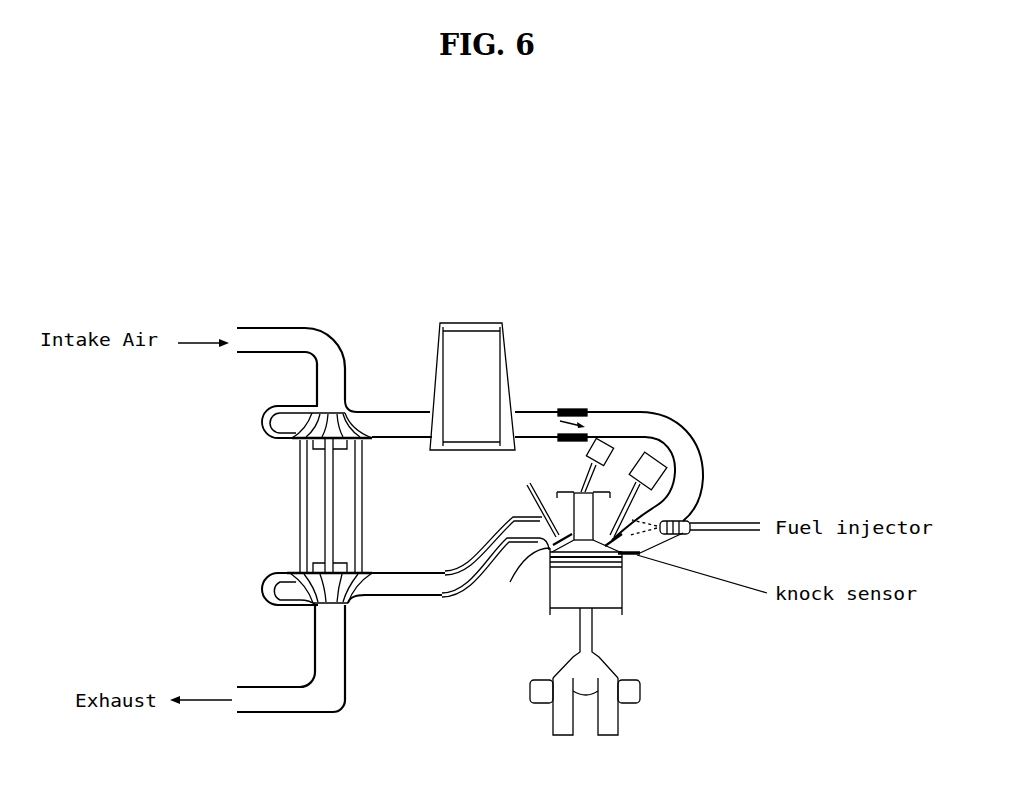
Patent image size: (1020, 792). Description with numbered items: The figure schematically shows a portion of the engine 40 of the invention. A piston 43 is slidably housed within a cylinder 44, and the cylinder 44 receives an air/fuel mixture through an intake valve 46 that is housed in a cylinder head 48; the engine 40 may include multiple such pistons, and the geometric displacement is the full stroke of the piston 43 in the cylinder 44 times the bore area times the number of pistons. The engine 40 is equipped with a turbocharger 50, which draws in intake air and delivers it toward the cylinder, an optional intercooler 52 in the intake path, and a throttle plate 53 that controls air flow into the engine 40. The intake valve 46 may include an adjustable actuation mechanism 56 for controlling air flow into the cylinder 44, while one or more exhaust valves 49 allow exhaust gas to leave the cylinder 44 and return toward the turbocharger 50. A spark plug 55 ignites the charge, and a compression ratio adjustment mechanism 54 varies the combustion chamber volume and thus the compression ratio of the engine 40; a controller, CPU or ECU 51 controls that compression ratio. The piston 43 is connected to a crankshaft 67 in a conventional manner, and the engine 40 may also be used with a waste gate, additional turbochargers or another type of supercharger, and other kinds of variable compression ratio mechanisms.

The engine 40 is at (385, 288).
The piston 43 is at (565, 600).
The cylinder 44 is at (623, 591).
The intake valve 46 is at (640, 547).
The cylinder head 48 is at (525, 560).
The exhaust valve 49 is at (515, 499).
The turbocharger 50 is at (300, 515).
The controller 51 is at (580, 492).
The intercooler 52 is at (513, 358).
The throttle plate 53 is at (577, 405).
The compression ratio adjustment mechanism 54 is at (600, 490).
The spark plug 55 is at (562, 493).
The adjustable actuation mechanism 56 is at (640, 462).
The crankshaft 67 is at (633, 683).